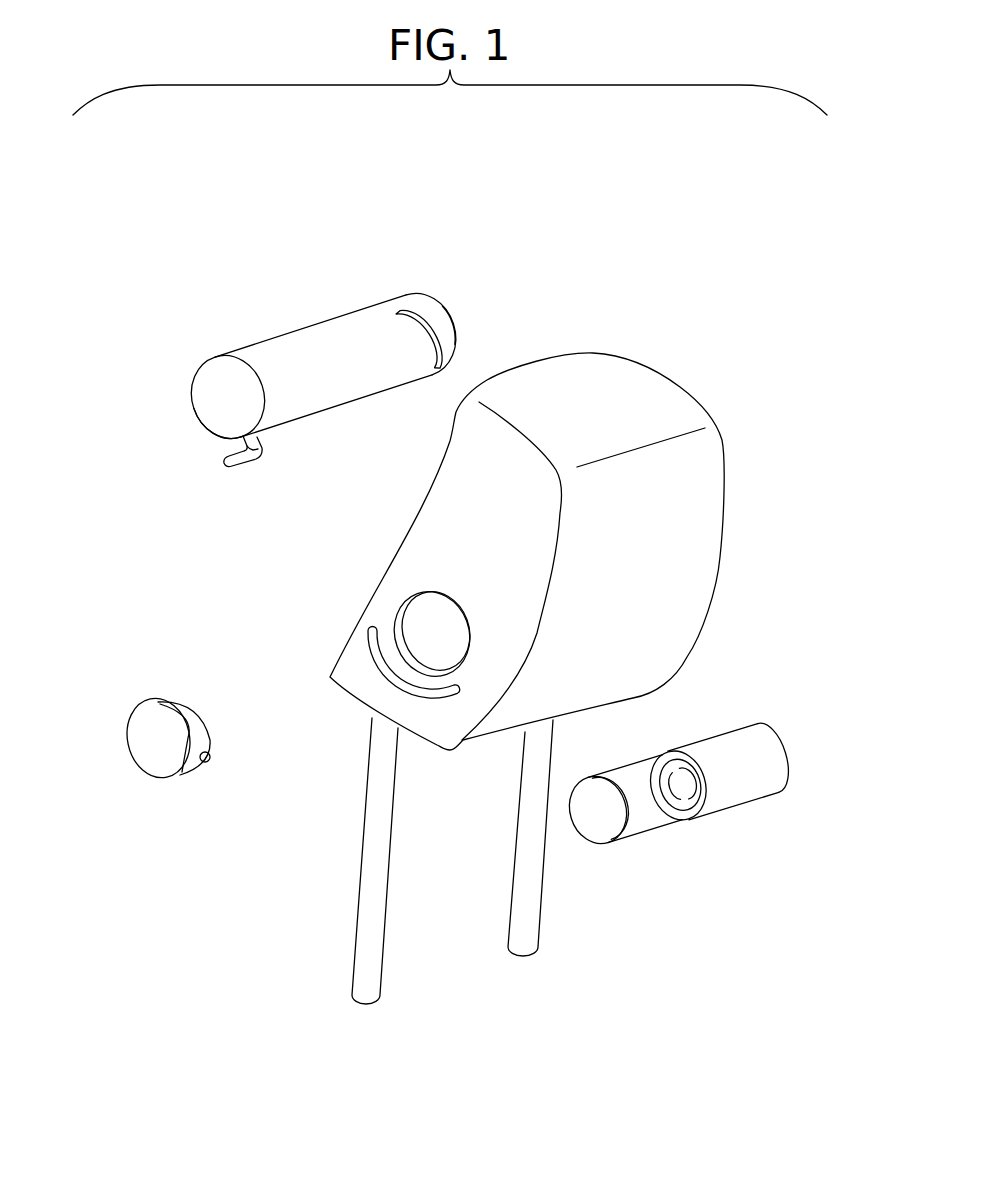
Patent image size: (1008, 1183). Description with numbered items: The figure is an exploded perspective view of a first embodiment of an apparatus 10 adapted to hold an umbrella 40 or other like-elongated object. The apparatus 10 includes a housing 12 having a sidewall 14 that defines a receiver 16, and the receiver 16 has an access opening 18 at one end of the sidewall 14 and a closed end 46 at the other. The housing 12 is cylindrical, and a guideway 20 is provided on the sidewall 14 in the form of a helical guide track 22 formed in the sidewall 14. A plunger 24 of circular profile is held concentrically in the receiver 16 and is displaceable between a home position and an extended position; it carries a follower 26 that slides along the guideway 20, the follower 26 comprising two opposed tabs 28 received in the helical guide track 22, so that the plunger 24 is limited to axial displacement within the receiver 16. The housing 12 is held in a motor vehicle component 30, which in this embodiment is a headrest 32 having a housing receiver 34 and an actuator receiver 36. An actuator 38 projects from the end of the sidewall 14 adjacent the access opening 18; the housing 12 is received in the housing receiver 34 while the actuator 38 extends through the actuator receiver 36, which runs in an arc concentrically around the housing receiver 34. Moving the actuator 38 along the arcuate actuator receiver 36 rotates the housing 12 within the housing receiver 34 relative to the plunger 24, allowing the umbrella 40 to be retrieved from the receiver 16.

The apparatus 10 is at (657, 190).
The housing 12 is at (233, 320).
The sidewall 14 is at (308, 408).
The receiver 16 is at (224, 391).
The access opening 18 is at (204, 418).
The guideway 20 is at (457, 317).
The helical guide track 22 is at (438, 347).
The plunger 24 is at (138, 770).
The follower 26 is at (195, 780).
The opposed tabs 28 is at (210, 763).
The motor vehicle component 30 is at (767, 443).
The headrest 32 is at (693, 633).
The housing receiver 34 is at (402, 607).
The actuator receiver 36 is at (375, 665).
The actuator 38 is at (228, 465).
The umbrella 40 is at (718, 805).
The closed end 46 is at (428, 302).